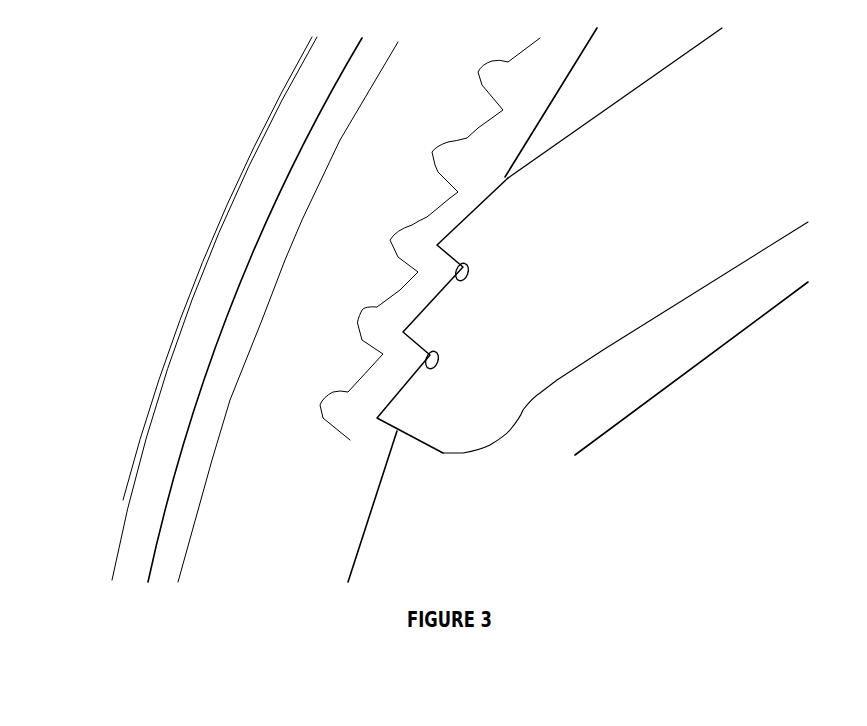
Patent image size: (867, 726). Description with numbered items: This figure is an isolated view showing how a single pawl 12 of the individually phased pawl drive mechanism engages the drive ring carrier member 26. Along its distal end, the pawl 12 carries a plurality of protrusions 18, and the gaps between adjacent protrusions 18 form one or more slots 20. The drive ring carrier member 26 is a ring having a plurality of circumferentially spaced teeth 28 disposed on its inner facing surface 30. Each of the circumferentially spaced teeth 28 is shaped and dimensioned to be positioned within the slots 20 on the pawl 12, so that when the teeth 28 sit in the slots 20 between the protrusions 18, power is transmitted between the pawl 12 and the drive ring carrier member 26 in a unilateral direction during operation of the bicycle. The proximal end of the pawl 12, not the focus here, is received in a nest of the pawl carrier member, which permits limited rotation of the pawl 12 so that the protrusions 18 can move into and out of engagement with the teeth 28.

The pawl 12 is at (668, 317).
The protrusions 18 is at (447, 235).
The slots 20 is at (466, 268).
The drive ring carrier member 26 is at (183, 302).
The circumferentially spaced teeth 28 is at (478, 127).
The inner facing surface 30 is at (306, 210).